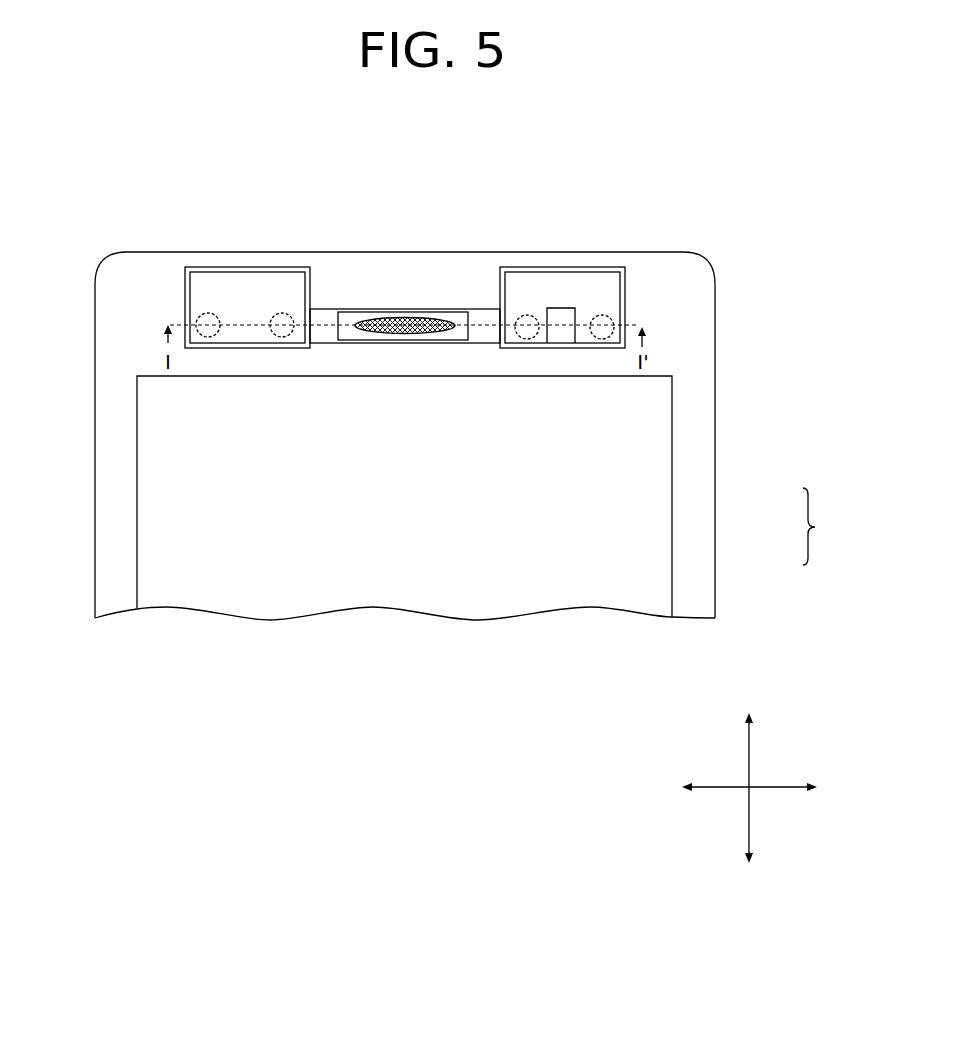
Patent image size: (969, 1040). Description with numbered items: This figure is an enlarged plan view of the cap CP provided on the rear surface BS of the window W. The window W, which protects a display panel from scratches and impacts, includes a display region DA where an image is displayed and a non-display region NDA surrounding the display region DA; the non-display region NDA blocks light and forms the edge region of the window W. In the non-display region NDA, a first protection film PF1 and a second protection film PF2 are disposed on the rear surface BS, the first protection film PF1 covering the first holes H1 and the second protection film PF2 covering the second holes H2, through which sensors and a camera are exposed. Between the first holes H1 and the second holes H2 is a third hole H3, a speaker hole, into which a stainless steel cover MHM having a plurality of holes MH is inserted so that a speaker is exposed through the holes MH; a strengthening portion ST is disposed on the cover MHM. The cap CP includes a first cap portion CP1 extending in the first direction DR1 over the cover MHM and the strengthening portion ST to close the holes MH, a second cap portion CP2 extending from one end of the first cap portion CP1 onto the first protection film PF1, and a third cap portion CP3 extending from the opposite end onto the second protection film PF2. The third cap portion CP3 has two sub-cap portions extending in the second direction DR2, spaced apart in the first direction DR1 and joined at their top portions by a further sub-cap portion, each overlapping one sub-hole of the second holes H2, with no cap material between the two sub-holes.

The cap CP is at (500, 188).
The first cap portion CP1 is at (325, 315).
The second cap portion CP2 is at (243, 280).
The third cap portion CP3 is at (500, 292).
The first holes H1 is at (197, 318).
The second holes H2 is at (647, 188).
The third hole H3 is at (415, 348).
The holes MH is at (352, 325).
The cover MHM is at (397, 352).
The strengthening portion ST is at (467, 328).
The first protection film PF1 is at (186, 296).
The second protection film PF2 is at (625, 277).
The rear surface BS is at (158, 503).
The display region DA is at (653, 550).
The non-display region NDA is at (690, 502).
The window W is at (820, 526).
The first direction DR1 is at (769, 789).
The second direction DR2 is at (750, 774).